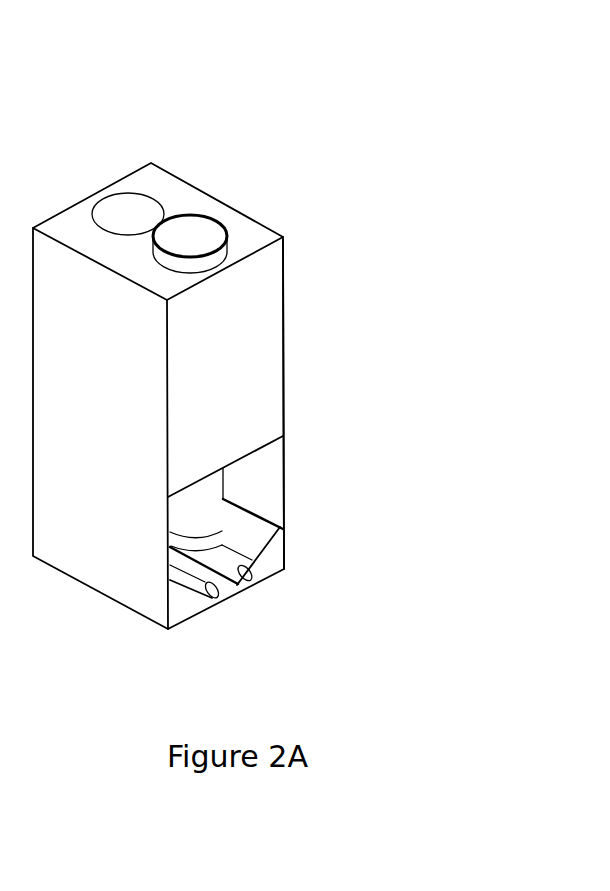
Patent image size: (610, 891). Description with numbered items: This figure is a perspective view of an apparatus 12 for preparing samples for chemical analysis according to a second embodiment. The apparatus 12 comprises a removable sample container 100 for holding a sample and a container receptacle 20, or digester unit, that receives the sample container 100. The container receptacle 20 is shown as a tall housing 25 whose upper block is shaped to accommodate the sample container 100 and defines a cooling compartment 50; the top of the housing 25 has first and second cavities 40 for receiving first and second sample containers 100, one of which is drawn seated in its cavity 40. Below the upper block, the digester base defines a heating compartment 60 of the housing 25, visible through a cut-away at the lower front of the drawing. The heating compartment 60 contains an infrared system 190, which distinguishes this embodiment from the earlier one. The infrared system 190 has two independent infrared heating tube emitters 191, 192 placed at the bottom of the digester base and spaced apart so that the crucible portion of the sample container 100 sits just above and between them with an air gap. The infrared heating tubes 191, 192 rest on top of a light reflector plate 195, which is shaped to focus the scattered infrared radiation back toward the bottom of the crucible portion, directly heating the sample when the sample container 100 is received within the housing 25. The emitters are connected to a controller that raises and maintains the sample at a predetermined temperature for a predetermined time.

The apparatus 12 is at (180, 52).
The container receptacle 20 is at (267, 228).
The housing 25 is at (286, 271).
The cavities 40 is at (131, 225).
The cooling compartment 50 is at (247, 380).
The heating compartment 60 is at (263, 487).
The sample container 100 is at (203, 210).
The infrared system 190 is at (210, 602).
The infrared heating tube emitter 191 is at (222, 600).
The infrared heating tube emitter 192 is at (265, 578).
The light reflector plate 195 is at (265, 550).